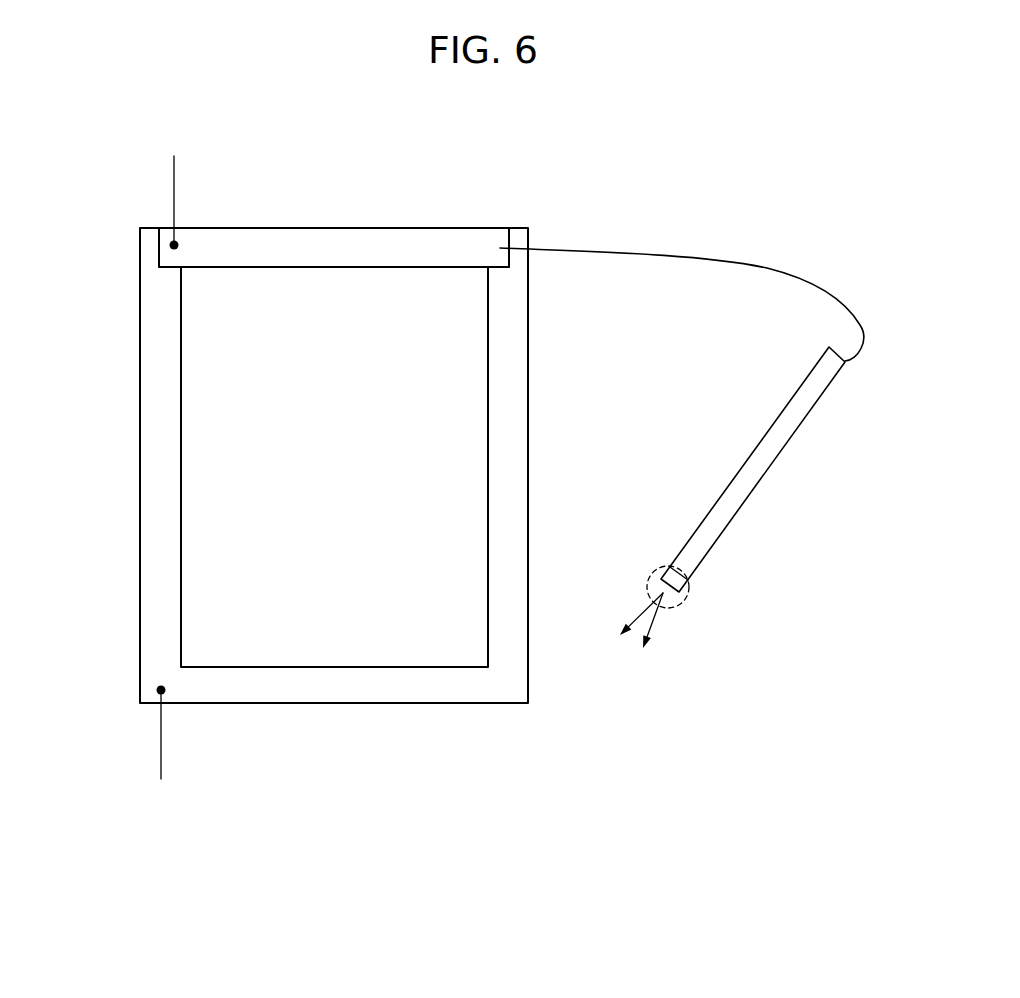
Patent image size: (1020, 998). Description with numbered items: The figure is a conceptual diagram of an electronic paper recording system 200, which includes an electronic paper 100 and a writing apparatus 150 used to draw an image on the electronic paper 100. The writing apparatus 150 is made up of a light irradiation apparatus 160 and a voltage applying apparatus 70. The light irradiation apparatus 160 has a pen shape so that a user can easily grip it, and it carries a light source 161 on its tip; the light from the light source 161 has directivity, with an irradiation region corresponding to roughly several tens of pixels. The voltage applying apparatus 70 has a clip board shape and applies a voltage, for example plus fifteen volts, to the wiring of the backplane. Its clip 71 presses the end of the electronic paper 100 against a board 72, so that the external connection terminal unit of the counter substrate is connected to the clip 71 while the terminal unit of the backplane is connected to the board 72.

The electronic paper recording system 200 is at (102, 196).
The voltage applying apparatus 70 is at (370, 203).
The clip 71 is at (453, 248).
The board 72 is at (506, 298).
The electronic paper 100 is at (378, 633).
The writing apparatus 150 is at (706, 431).
The light irradiation apparatus 160 is at (757, 463).
The light source 161 is at (690, 585).